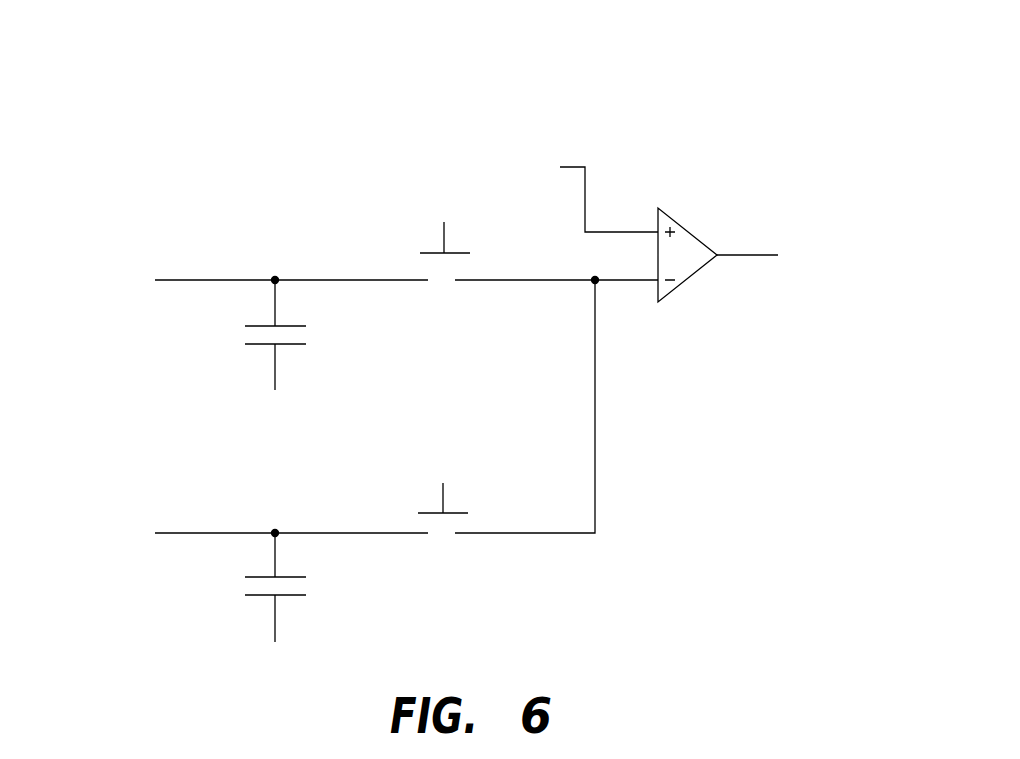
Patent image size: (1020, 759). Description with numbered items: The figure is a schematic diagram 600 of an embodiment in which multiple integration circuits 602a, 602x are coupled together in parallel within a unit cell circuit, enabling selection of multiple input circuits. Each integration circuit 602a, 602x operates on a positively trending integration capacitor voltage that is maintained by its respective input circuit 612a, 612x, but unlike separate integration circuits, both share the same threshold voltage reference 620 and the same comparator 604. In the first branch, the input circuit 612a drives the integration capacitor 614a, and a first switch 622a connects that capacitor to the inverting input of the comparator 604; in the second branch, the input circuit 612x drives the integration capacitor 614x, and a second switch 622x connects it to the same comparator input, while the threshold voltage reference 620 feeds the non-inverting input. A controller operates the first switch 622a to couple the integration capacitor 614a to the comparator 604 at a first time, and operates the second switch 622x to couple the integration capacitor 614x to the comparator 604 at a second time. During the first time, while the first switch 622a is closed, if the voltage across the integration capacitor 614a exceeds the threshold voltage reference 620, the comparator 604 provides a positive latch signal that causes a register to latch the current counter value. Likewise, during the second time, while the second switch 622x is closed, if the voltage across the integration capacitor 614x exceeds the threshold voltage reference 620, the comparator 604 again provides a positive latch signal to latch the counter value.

The schematic diagram 600 is at (663, 87).
The integration circuit 602a is at (252, 195).
The integration circuit 602x is at (190, 458).
The comparator 604 is at (687, 280).
The input circuit 612a is at (90, 302).
The input circuit 612x is at (100, 553).
The integration capacitor 614a is at (292, 345).
The integration capacitor 614x is at (292, 597).
The threshold voltage reference 620 is at (502, 157).
The first switch 622a is at (420, 253).
The second switch 622x is at (420, 513).